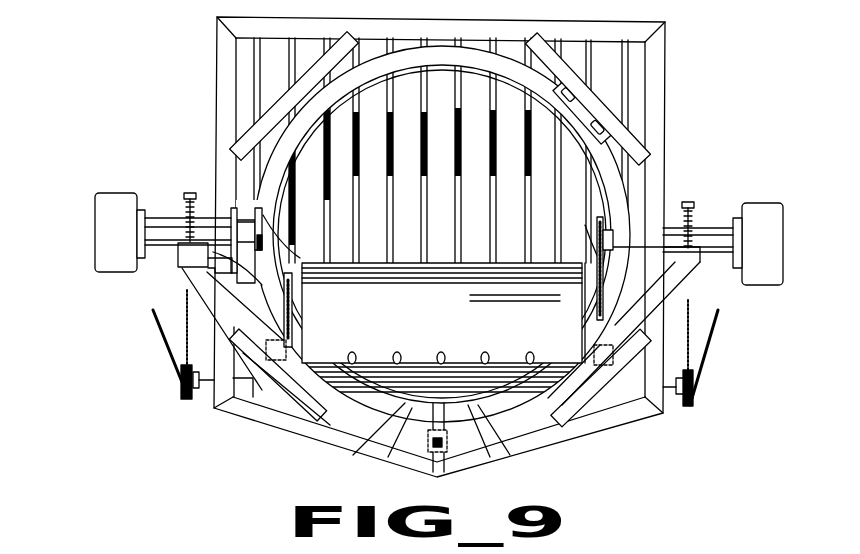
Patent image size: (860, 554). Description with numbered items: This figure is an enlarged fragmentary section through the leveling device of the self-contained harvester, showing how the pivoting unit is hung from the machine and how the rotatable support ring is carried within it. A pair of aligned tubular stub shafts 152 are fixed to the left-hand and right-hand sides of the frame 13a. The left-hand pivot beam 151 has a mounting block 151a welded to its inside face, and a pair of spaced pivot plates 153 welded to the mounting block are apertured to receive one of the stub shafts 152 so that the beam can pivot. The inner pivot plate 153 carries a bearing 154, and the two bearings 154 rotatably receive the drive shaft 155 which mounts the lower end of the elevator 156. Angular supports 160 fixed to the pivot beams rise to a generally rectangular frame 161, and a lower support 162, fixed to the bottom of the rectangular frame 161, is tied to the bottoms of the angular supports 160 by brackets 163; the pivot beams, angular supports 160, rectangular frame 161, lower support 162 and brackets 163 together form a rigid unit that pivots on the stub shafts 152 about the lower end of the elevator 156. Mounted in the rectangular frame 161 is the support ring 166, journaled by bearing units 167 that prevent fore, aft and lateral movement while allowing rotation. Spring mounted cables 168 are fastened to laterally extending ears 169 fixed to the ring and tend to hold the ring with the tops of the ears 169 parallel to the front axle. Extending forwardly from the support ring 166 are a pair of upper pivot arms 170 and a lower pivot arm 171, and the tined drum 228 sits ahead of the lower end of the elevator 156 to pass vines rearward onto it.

The frame 13a is at (95, 276).
The left-hand pivot beam 151 is at (223, 272).
The mounting block 151a is at (272, 305).
The tubular stub shaft 152 is at (160, 225).
The pivot plate 153 is at (236, 200).
The bearing 154 is at (240, 266).
The drive shaft 155 is at (248, 252).
The elevator 156 is at (466, 101).
The angular support 160 is at (243, 50).
The rectangular frame 161 is at (222, 396).
The lower support 162 is at (428, 446).
The bracket 163 is at (380, 422).
The support ring 166 is at (572, 412).
The bearing unit 167 is at (298, 102).
The spring mounted cable 168 is at (187, 342).
The laterally extending ear 169 is at (190, 258).
The upper pivot arm 170 is at (240, 398).
The lower pivot arm 171 is at (447, 447).
The tined drum 228 is at (500, 337).